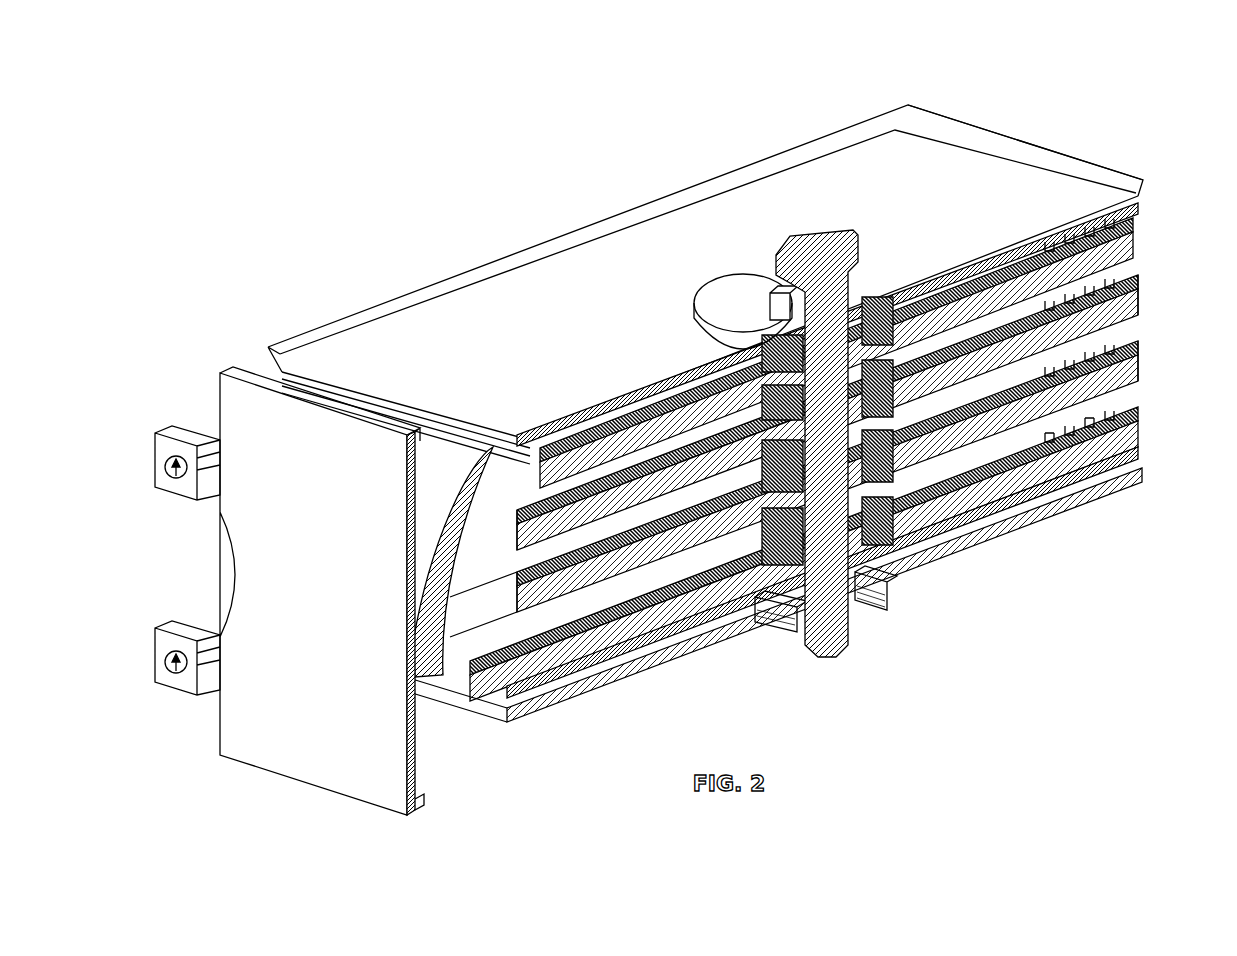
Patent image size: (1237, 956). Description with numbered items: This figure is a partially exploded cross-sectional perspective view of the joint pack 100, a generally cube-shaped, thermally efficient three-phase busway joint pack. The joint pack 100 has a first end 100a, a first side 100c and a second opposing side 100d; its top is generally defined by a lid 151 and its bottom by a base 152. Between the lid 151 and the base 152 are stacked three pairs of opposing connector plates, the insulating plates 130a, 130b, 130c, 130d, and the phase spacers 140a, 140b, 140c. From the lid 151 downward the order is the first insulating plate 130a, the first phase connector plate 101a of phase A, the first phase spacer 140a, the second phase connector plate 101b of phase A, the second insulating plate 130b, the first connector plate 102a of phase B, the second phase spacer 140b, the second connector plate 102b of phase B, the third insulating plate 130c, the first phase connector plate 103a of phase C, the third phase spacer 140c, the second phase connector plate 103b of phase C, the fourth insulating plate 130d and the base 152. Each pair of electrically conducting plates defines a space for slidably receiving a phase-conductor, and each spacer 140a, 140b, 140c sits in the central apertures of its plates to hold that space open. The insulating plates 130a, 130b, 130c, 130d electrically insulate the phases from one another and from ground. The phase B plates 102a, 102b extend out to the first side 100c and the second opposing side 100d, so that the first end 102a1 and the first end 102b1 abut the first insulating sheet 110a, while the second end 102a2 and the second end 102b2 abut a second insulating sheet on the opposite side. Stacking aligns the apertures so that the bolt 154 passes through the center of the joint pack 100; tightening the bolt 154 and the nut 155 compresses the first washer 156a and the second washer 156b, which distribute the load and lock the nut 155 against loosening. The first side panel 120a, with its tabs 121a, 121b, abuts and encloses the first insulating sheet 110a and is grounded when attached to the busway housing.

The joint pack 100 is at (689, 431).
The first end 100a is at (572, 224).
The first side 100c is at (267, 362).
The second opposing side 100d is at (1000, 122).
The lid 151 is at (668, 205).
The base 152 is at (497, 715).
The bolt 154 is at (830, 240).
The nut 155 is at (880, 598).
The first washer 156a is at (735, 300).
The second washer 156b is at (740, 625).
The first phase connector plate 101a is at (1045, 245).
The second phase connector plate 101b is at (1025, 322).
The first connector plate 102a is at (819, 404).
The first end 102a1 is at (509, 533).
The second end 102a2 is at (1141, 310).
The second connector plate 102b is at (800, 542).
The first end 102b1 is at (492, 583).
The second end 102b2 is at (1141, 358).
The first phase connector plate 103a is at (658, 565).
The second phase connector plate 103b is at (983, 503).
The first insulating sheet 110a is at (464, 486).
The first side panel 120a is at (289, 591).
The upper mounting tab 121a is at (175, 479).
The lower mounting tab 121b is at (175, 674).
The first insulating plate 130a is at (598, 445).
The second insulating plate 130b is at (550, 495).
The third insulating plate 130c is at (1106, 396).
The fourth insulating plate 130d is at (1093, 470).
The first phase spacer 140a is at (888, 330).
The second phase spacer 140b is at (898, 467).
The third phase spacer 140c is at (708, 598).